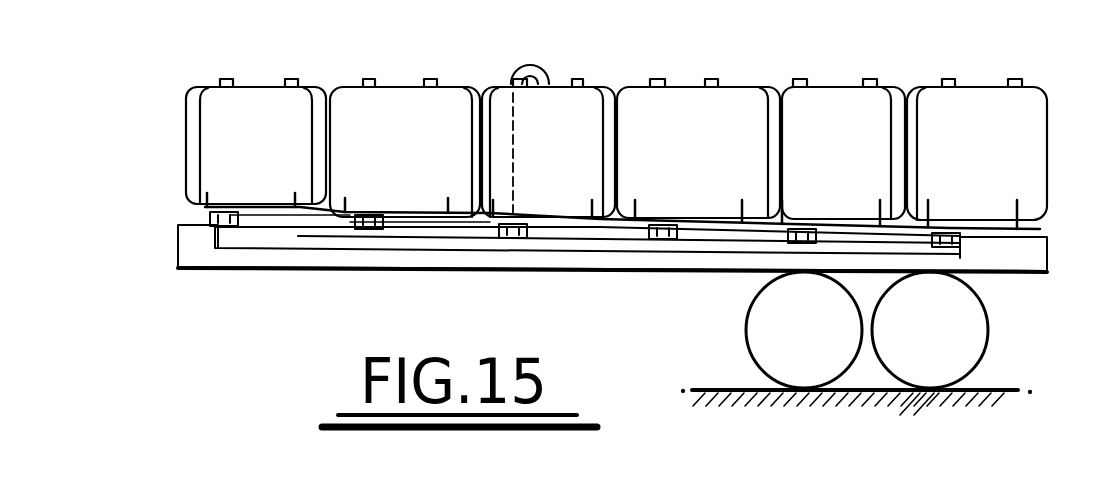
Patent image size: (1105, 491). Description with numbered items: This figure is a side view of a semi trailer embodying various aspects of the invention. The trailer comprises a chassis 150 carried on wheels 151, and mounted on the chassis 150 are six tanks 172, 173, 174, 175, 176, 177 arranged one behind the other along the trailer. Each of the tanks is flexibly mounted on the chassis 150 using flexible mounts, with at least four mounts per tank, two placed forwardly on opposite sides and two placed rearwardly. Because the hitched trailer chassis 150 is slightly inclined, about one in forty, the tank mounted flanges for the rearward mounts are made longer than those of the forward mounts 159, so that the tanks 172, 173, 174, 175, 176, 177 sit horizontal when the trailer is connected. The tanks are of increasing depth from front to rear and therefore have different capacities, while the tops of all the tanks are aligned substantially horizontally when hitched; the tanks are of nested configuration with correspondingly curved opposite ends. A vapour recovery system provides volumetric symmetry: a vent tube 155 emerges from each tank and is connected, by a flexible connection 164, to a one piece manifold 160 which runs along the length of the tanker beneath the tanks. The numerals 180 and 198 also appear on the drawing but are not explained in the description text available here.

The chassis 150 is at (178, 233).
The wheels 151 is at (815, 342).
The vent tube 155 is at (520, 210).
The forward mounts 159 is at (205, 212).
The one piece manifold 160 is at (543, 250).
The flexible connection 164 is at (213, 232).
The tank 172 is at (207, 98).
The tank 173 is at (407, 110).
The tank 174 is at (569, 118).
The tank 175 is at (705, 128).
The tank 176 is at (825, 115).
The tank 177 is at (965, 115).
The container assembly 180 is at (478, 8).
The stop post 198 is at (300, 207).